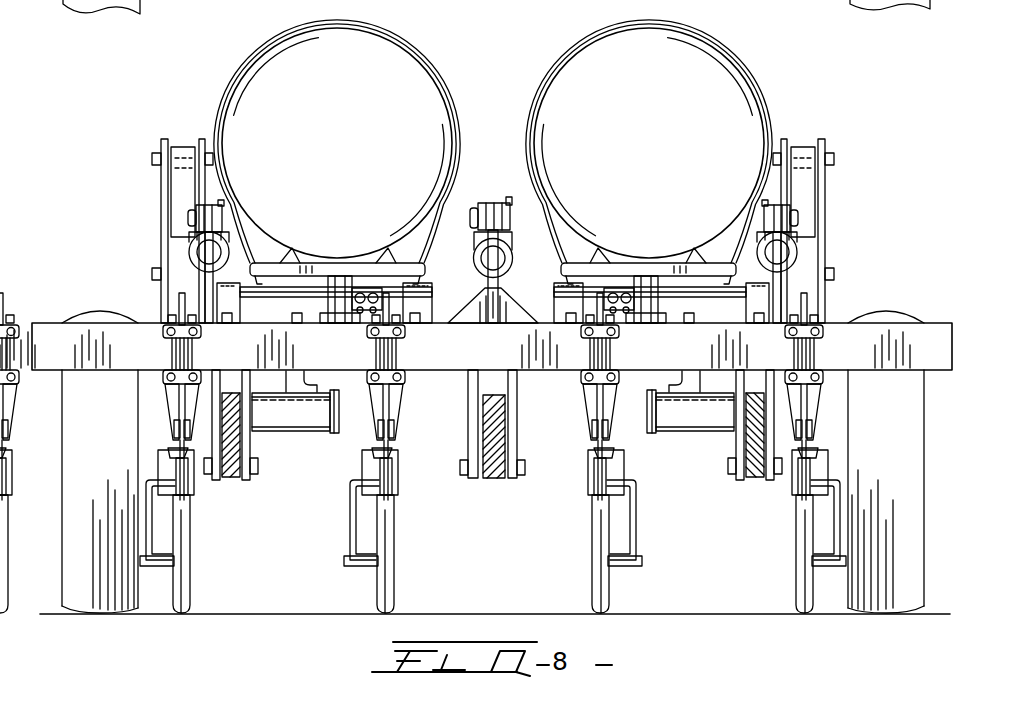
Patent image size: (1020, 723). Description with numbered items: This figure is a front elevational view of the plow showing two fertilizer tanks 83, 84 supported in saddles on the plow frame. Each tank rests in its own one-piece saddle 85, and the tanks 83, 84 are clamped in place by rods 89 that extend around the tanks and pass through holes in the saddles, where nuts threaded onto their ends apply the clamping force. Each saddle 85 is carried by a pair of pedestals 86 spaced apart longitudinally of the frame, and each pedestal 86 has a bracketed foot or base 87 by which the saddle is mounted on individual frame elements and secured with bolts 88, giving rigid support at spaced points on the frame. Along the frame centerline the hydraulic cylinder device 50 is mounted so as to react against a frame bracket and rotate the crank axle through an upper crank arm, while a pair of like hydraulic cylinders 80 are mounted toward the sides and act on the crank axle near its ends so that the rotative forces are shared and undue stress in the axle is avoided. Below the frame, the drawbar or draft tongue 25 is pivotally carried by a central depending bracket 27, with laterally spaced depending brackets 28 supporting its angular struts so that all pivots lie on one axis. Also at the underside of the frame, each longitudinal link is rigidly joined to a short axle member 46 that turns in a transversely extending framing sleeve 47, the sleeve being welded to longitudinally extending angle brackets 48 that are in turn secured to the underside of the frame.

The draft tongue 25 is at (487, 432).
The central depending bracket 27 is at (518, 437).
The depending bracket 28 is at (258, 470).
The axle member 46 is at (336, 400).
The framing sleeve 47 is at (295, 428).
The angle bracket 48 is at (316, 379).
The hydraulic cylinder device 50 is at (467, 242).
The hydraulic cylinder 80 is at (190, 243).
The fertilizer tank 83 is at (430, 97).
The fertilizer tank 84 is at (610, 78).
The saddle 85 is at (355, 268).
The pedestal 86 is at (327, 290).
The bracketed foot 87 is at (348, 323).
The bolt 88 is at (384, 299).
The rod 89 is at (430, 243).